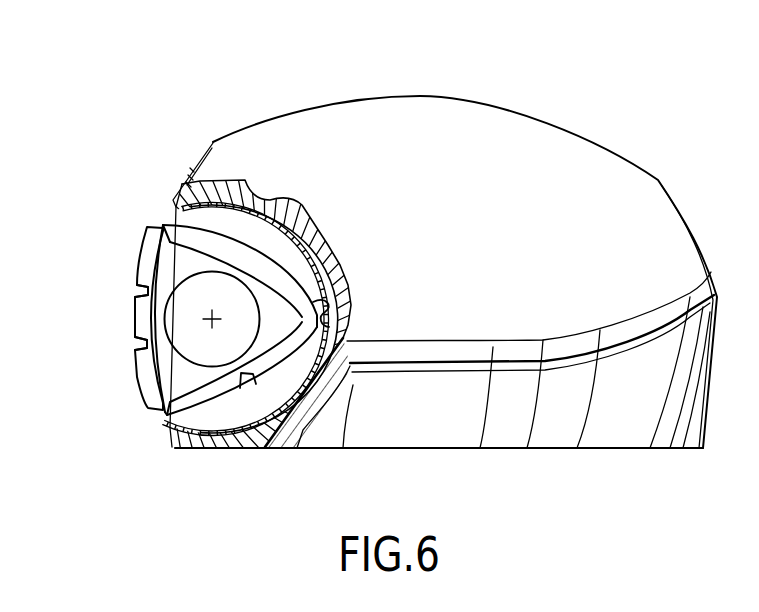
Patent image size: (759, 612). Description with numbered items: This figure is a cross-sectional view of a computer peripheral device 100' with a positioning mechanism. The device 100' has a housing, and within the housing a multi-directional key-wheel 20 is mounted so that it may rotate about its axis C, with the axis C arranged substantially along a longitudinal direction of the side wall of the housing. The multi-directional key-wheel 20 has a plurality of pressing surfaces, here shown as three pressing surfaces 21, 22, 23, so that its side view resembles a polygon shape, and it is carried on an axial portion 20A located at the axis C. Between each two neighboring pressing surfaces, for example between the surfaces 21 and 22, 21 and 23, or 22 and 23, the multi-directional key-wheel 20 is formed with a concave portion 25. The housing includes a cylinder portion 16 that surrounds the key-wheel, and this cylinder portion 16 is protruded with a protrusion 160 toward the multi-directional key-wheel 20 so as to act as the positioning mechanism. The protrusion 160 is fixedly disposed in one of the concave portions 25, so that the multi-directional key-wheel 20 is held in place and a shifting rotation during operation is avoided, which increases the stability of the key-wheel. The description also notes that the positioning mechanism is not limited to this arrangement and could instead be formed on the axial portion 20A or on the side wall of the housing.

The computer peripheral device 100' is at (445, 244).
The cylinder portion 16 is at (324, 258).
The concave portion 25 is at (334, 288).
The pressing surface 21 is at (256, 267).
The pressing surface 22 is at (220, 388).
The protrusion 160 is at (323, 316).
The multi-directional key-wheel 20 is at (132, 244).
The axial portion 20A is at (186, 362).
The pressing surface 23 is at (146, 310).
The axis C is at (210, 320).